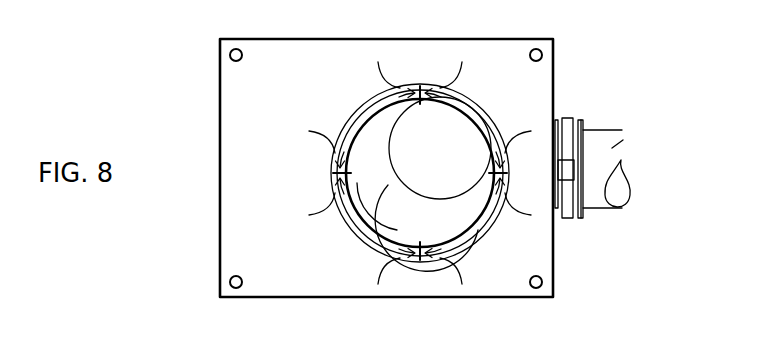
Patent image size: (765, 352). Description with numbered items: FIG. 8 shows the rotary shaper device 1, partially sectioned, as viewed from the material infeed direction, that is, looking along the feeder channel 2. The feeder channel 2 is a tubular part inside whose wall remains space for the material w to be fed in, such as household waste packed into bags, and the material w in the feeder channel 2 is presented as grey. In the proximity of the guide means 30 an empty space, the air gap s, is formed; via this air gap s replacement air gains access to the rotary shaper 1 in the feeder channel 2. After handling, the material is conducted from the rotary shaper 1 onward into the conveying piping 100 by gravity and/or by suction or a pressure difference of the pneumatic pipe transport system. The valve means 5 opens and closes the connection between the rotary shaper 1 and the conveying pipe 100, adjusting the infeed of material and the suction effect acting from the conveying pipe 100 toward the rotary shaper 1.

The rotary shaper device 1 is at (283, 203).
The feeder channel 2 is at (353, 153).
The guide means 30 is at (420, 88).
The material W is at (343, 132).
The air gap S is at (340, 162).
The valve means 5 is at (580, 118).
The conveying piping 100 is at (621, 160).